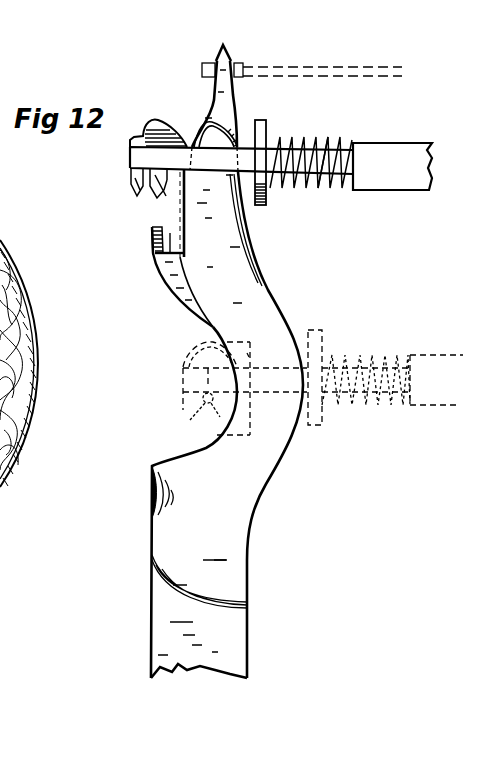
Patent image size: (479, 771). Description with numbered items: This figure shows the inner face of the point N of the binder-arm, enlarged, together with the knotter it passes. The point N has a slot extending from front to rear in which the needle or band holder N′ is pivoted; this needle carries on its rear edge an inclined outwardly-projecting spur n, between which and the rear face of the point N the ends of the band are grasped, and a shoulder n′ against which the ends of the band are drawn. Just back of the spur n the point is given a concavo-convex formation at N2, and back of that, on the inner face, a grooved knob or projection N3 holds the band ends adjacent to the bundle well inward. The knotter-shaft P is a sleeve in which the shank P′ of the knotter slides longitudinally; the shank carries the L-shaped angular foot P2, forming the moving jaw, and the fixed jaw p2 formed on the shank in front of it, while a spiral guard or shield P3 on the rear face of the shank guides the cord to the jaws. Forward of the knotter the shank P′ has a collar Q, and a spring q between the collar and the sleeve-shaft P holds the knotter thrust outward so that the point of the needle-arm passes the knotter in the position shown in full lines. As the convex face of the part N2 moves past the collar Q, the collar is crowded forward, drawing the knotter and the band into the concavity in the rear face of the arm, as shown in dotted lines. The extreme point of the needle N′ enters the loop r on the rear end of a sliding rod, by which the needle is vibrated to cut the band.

The point of the binder-arm N is at (224, 241).
The needle or band holder N′ is at (255, 148).
The concavo-convex formation N2 is at (310, 385).
The grooved knob or projection N3 is at (213, 564).
The spur n is at (177, 277).
The shoulder n′ is at (167, 200).
The knotter-shaft P is at (392, 166).
The shank of the knotter P′ is at (341, 152).
The angular foot P2 is at (146, 192).
The spiral guard or shield P3 is at (143, 133).
The fixed jaw p2 is at (152, 229).
The collar Q is at (311, 152).
The spring q is at (323, 155).
The loop r is at (302, 61).